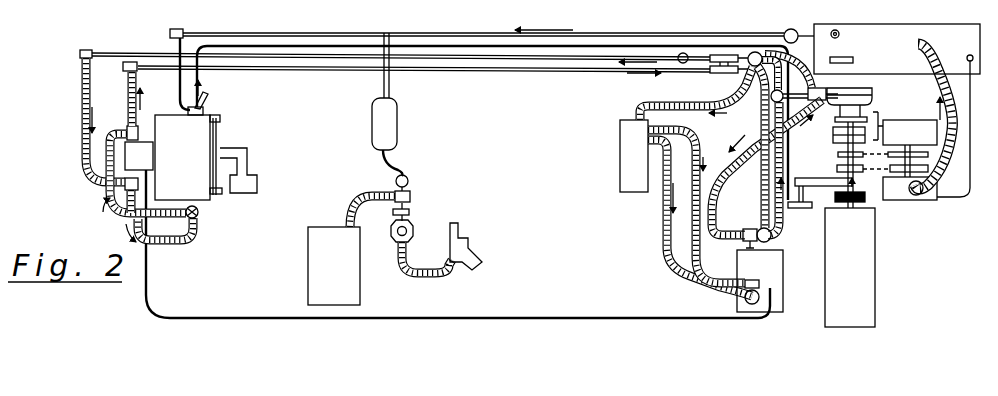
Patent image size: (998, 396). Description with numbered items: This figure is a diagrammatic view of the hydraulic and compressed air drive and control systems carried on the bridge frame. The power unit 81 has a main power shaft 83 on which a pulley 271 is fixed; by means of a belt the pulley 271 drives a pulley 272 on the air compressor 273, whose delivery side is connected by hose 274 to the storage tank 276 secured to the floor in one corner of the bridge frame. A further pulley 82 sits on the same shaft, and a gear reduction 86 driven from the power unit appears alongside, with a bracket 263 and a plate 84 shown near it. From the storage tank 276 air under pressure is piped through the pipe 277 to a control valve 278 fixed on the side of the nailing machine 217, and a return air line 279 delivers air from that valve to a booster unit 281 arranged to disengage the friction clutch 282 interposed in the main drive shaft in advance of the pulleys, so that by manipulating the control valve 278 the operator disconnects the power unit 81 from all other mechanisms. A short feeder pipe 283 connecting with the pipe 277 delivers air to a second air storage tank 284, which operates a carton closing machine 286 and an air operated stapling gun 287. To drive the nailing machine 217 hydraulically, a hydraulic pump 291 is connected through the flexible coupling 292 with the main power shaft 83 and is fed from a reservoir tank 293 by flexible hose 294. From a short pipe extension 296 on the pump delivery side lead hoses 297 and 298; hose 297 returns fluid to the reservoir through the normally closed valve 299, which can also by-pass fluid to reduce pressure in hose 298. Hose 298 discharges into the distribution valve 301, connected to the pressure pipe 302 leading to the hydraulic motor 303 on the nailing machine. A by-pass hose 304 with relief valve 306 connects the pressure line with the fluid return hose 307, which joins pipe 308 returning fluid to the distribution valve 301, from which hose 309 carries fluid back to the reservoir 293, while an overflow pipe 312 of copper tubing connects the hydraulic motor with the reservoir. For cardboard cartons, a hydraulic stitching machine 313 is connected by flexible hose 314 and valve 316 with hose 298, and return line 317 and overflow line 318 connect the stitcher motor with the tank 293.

The power unit 81 is at (857, 270).
The pulley 82 is at (838, 155).
The main power shaft 83 is at (857, 185).
The plate 84 is at (898, 152).
The gear reduction 86 is at (935, 135).
The nailing machine 217 is at (192, 182).
The bracket 263 is at (877, 118).
The pulley 271 is at (837, 169).
The pulley 272 is at (892, 168).
The air compressor 273 is at (905, 198).
The hose 274 is at (938, 166).
The storage tank 276 is at (965, 42).
The pipe 277 is at (665, 42).
The control valve 278 is at (206, 109).
The return air line 279 is at (202, 78).
The booster unit 281 is at (807, 208).
The friction clutch 282 is at (835, 194).
The feeder pipe 283 is at (394, 88).
The second air storage tank 284 is at (399, 128).
The carton closing machine 286 is at (345, 299).
The air operated stapling gun 287 is at (478, 266).
The hydraulic pump 291 is at (873, 98).
The flexible coupling 292 is at (833, 135).
The reservoir tank 293 is at (783, 272).
The flexible hose 294 is at (790, 241).
The short pipe extension 296 is at (810, 99).
The flexible hydraulic hose 297 is at (728, 172).
The flexible hydraulic hose 298 is at (788, 71).
The normally closed valve 299 is at (773, 81).
The distribution valve 301 is at (723, 74).
The pressure pipe 302 is at (80, 82).
The hydraulic motor 303 is at (151, 164).
The by-pass hose 304 is at (173, 245).
The relief valve 306 is at (200, 213).
The fluid return hose 307 is at (128, 113).
The pipe 308 is at (328, 70).
The hose 309 is at (762, 104).
The overflow pipe 312 is at (570, 318).
The hydraulic stitching machine 313 is at (634, 137).
The flexible hose 314 is at (679, 106).
The valve 316 is at (753, 51).
The return line 317 is at (680, 135).
The overflow line 318 is at (663, 229).